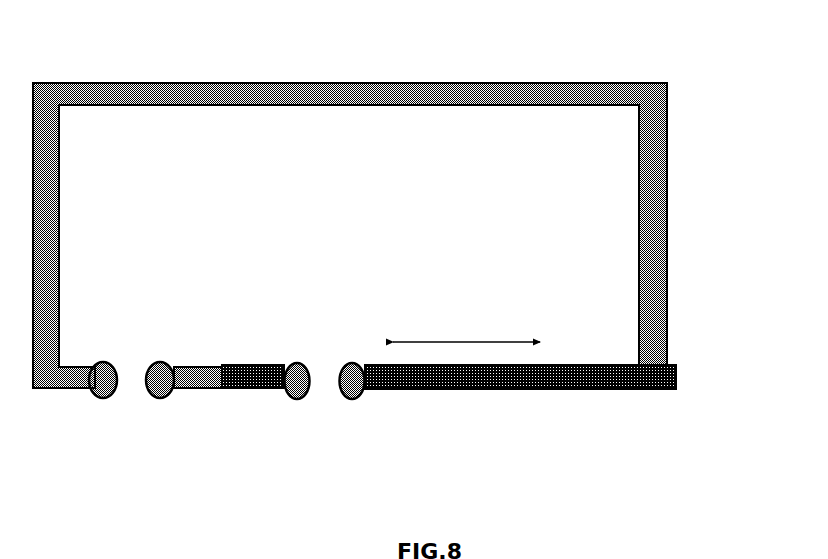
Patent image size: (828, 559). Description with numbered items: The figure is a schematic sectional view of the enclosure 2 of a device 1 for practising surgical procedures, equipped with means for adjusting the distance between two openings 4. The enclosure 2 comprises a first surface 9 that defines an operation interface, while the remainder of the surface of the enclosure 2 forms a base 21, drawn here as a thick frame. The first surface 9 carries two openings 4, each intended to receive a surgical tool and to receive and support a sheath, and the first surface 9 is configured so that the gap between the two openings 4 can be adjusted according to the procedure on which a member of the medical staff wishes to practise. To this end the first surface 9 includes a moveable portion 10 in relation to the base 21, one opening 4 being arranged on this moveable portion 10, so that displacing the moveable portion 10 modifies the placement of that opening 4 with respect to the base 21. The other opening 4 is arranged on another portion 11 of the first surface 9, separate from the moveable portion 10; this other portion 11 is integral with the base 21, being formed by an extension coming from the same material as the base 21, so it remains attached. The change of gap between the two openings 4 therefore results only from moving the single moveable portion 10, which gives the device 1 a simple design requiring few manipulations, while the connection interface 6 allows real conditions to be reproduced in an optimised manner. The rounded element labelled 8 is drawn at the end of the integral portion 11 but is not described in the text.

The device 1 is at (693, 132).
The enclosure 2 is at (667, 197).
The base 21 is at (120, 93).
The opening 4 is at (135, 373).
The connection interface 6 is at (290, 362).
The roller 8 is at (100, 362).
The first surface 9 is at (195, 393).
The moveable portion 10 is at (578, 390).
The other portion 11 is at (57, 393).